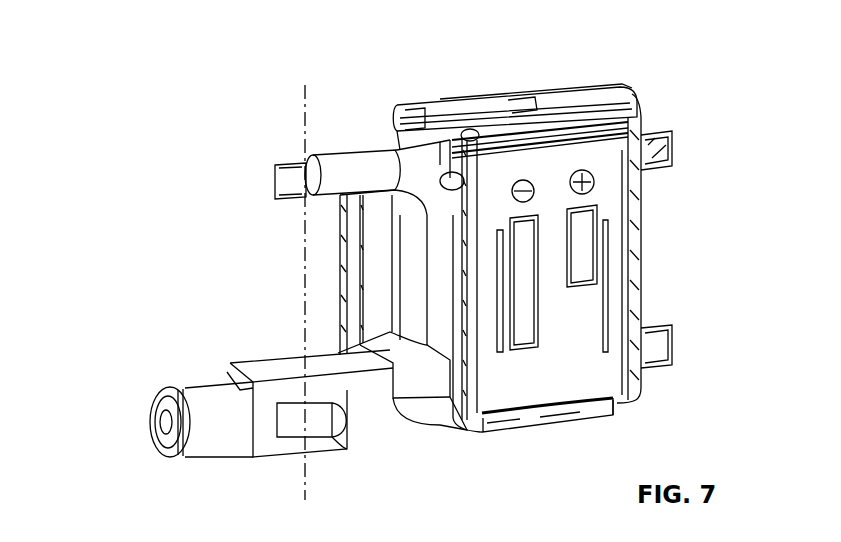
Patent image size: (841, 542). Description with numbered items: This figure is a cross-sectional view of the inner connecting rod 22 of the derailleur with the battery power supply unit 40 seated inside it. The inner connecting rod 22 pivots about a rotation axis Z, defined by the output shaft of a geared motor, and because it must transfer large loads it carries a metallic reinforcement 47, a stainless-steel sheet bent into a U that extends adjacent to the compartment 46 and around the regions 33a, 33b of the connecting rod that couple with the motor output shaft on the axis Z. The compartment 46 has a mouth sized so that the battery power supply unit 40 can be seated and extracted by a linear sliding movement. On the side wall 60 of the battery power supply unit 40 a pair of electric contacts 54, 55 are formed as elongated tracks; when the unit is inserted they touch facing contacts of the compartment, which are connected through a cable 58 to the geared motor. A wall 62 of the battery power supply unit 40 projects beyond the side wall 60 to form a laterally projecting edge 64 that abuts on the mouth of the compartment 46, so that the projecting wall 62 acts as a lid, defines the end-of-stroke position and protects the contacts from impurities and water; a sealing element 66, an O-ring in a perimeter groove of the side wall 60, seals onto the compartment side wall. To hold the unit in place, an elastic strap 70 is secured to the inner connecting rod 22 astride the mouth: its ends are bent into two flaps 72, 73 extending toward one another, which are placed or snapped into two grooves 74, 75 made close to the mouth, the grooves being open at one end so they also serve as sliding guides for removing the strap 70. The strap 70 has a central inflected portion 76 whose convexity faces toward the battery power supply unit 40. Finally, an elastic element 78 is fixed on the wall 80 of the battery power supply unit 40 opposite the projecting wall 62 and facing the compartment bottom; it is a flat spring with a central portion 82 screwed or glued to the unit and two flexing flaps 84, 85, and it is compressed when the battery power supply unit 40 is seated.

The inner connecting rod 22 is at (103, 104).
The rotation axis Z is at (300, 101).
The coupling region of the connecting rod 33a is at (302, 160).
The coupling region of the connecting rod 33b is at (298, 356).
The battery power supply unit 40 is at (490, 300).
The compartment 46 is at (645, 287).
The metallic reinforcement 47 is at (390, 350).
The electric contact 54 is at (522, 266).
The electric contact 55 is at (580, 248).
The cable 58 is at (410, 167).
The side wall of the battery power supply unit 60 is at (615, 200).
The projecting wall 62 is at (610, 113).
The laterally projecting edge 64 is at (645, 118).
The sealing element 66 is at (641, 172).
The strap 70 is at (567, 93).
The flap of the strap 72 is at (417, 122).
The flap of the strap 73 is at (640, 100).
The groove 74 is at (462, 142).
The groove 75 is at (640, 124).
The inflected portion 76 is at (527, 108).
The elastic element 78 is at (575, 374).
The wall of the battery power supply unit 80 is at (490, 420).
The central portion 82 is at (548, 404).
The flexing flap 84 is at (501, 416).
The flexing flap 85 is at (613, 413).